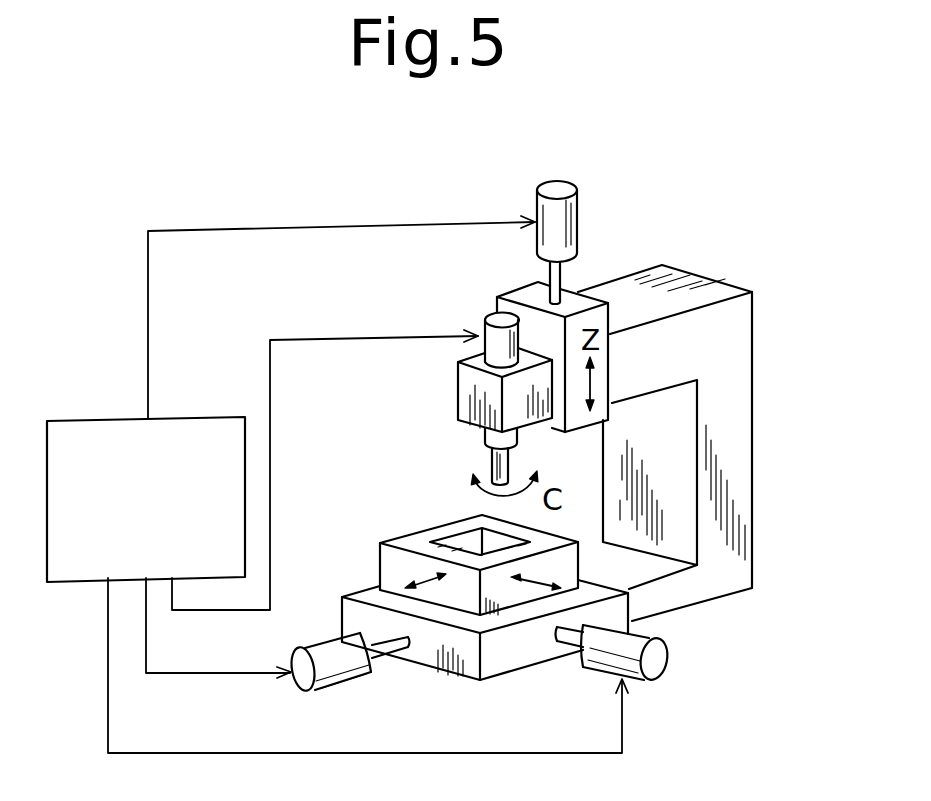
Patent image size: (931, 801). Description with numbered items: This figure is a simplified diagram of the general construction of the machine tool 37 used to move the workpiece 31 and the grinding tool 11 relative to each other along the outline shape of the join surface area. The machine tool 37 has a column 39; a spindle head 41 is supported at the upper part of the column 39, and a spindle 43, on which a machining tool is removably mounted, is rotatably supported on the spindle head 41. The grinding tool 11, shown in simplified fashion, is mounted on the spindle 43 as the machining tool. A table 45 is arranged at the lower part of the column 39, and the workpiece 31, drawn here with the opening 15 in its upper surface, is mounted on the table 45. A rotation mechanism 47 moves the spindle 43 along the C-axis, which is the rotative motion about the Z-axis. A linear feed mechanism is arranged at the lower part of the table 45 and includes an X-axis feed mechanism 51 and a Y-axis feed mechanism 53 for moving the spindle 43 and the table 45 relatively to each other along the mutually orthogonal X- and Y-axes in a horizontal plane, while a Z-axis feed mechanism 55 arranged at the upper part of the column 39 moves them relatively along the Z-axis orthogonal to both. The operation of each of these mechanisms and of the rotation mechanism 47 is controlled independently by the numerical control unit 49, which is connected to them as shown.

The grinding tool 11 is at (493, 460).
The workpiece 15 is at (454, 527).
The workpiece 31 is at (378, 565).
The machine tool 37 is at (724, 269).
The column 39 is at (737, 418).
The spindle head 41 is at (468, 397).
The spindle 43 is at (492, 436).
The table 45 is at (525, 647).
The rotation mechanism 47 is at (495, 311).
The numerical control unit 49 is at (88, 417).
The X-axis feed mechanism 51 is at (656, 658).
The Y-axis feed mechanism 53 is at (348, 658).
The Z-axis feed mechanism 55 is at (560, 191).